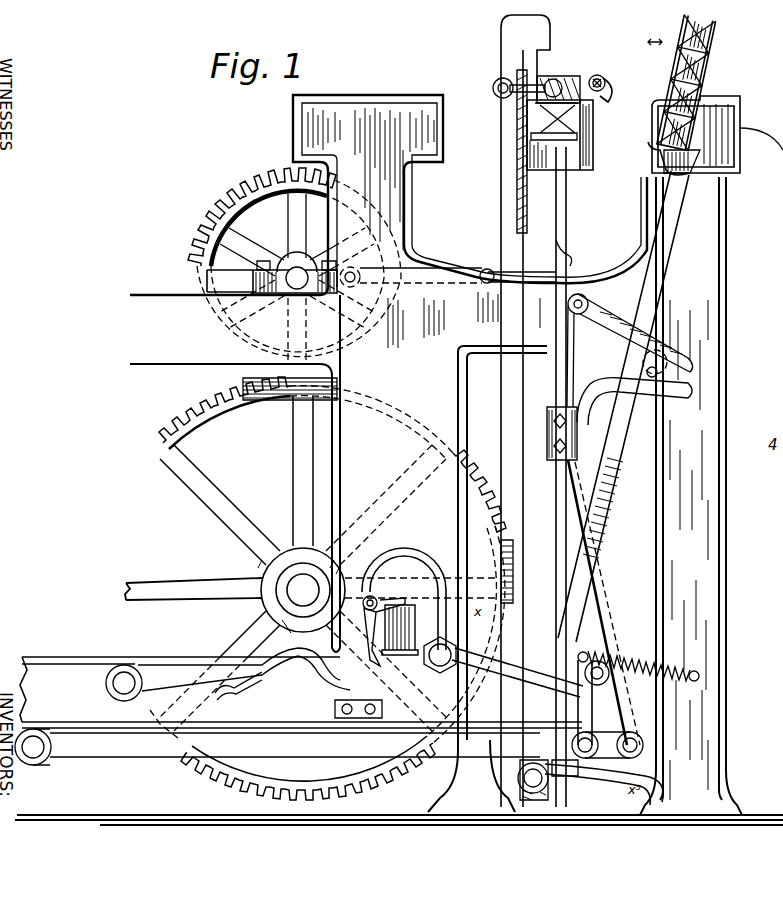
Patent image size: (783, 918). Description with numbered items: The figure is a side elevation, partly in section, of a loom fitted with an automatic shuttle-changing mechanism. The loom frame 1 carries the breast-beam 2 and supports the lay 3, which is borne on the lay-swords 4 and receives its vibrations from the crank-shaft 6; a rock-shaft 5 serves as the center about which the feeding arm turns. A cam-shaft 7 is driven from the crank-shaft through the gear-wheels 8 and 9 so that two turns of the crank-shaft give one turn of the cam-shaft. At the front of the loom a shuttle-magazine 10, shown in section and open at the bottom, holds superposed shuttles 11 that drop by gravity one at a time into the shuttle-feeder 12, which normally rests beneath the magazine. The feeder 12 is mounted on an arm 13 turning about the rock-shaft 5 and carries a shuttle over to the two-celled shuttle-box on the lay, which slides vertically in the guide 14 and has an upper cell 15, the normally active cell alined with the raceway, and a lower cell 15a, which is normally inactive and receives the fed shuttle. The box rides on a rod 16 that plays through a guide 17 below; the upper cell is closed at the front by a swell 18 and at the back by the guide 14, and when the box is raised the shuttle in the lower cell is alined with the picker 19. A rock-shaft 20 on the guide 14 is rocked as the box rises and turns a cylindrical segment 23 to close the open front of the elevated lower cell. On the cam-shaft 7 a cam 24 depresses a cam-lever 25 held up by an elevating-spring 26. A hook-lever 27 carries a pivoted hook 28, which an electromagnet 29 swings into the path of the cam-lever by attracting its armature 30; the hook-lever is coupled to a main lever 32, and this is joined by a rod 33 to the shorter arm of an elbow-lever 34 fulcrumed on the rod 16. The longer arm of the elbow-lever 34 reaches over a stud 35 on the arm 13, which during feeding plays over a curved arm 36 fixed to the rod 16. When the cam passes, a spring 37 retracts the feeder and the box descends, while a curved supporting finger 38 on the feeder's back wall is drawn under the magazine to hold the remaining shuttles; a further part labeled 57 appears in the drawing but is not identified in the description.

The loom frame 1 is at (392, 101).
The breast-beam 2 is at (742, 163).
The lay 3 is at (593, 160).
The lay-swords 4 is at (520, 412).
The rock-shaft 5 is at (518, 779).
The crank-shaft 6 is at (297, 290).
The cam-shaft 7 is at (262, 592).
The gear-wheel 8 is at (225, 226).
The gear-wheel 9 is at (196, 410).
The shuttle-magazine 10 is at (705, 54).
The shuttles 11 is at (690, 70).
The shuttle-feeder 12 is at (664, 152).
The arm 13 is at (672, 294).
The guide 14 is at (534, 124).
The upper shuttle-cell 15 is at (572, 78).
The lower shuttle-cell 15a is at (554, 121).
The rod 16 is at (568, 258).
The guide 17 is at (582, 770).
The swell 18 is at (565, 86).
The picker 19 is at (530, 92).
The rock-shaft 20 is at (608, 75).
The cylindrical segment 23 is at (606, 98).
The cam 24 is at (262, 590).
The cam-lever 25 is at (301, 688).
The elevating-spring 26 is at (270, 694).
The hook-lever 27 is at (425, 580).
The hook 28 is at (424, 660).
The electromagnet 29 is at (416, 622).
The armature 30 is at (398, 600).
The main lever 32 is at (329, 712).
The link or rod 33 is at (556, 398).
The elbow-lever 34 is at (600, 322).
The stud 35 is at (635, 335).
The curved arm 36 is at (690, 390).
The spring 37 is at (642, 663).
The curved supporting plate or finger 38 is at (761, 135).
The post 57 is at (512, 52).